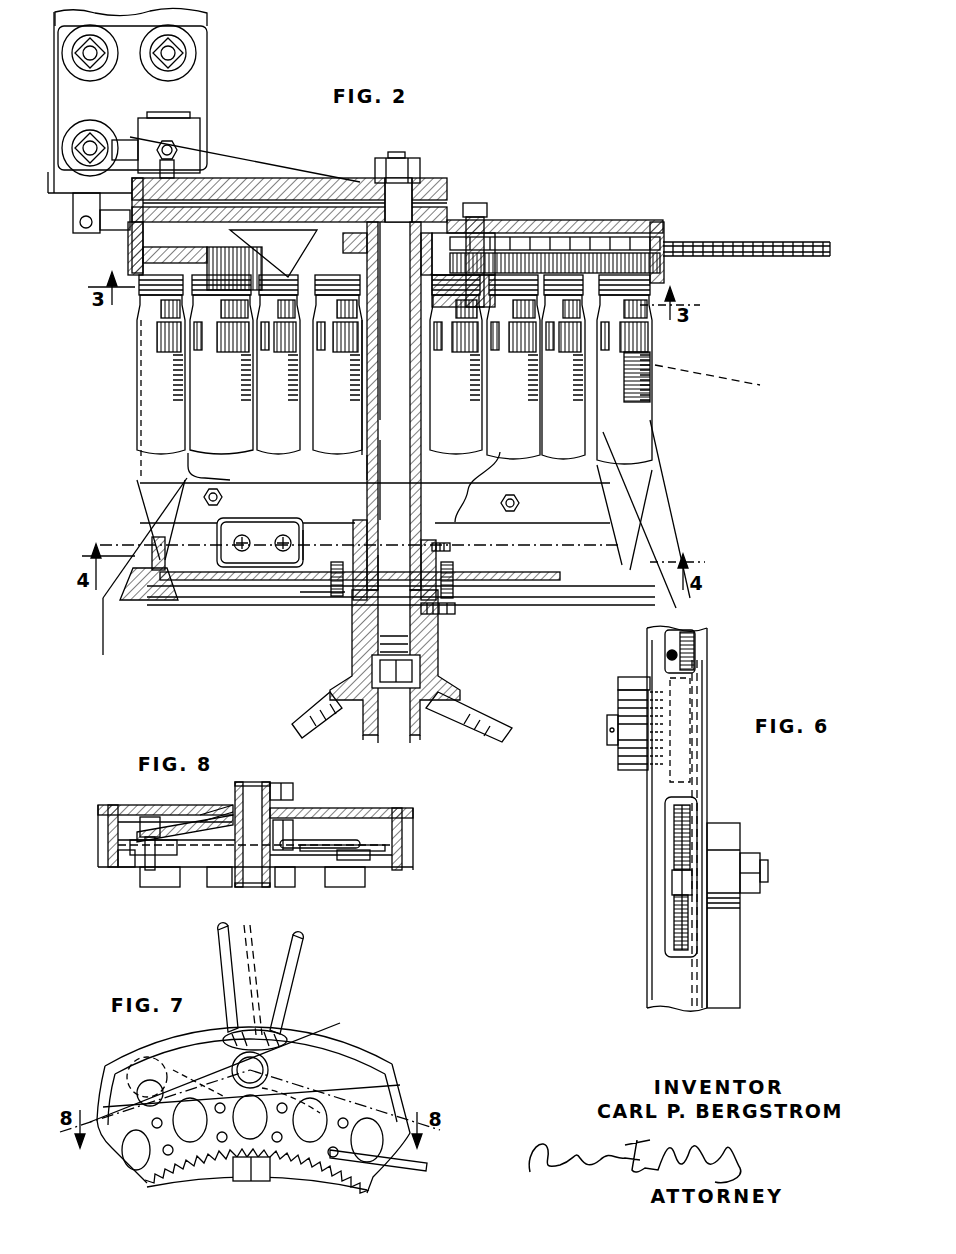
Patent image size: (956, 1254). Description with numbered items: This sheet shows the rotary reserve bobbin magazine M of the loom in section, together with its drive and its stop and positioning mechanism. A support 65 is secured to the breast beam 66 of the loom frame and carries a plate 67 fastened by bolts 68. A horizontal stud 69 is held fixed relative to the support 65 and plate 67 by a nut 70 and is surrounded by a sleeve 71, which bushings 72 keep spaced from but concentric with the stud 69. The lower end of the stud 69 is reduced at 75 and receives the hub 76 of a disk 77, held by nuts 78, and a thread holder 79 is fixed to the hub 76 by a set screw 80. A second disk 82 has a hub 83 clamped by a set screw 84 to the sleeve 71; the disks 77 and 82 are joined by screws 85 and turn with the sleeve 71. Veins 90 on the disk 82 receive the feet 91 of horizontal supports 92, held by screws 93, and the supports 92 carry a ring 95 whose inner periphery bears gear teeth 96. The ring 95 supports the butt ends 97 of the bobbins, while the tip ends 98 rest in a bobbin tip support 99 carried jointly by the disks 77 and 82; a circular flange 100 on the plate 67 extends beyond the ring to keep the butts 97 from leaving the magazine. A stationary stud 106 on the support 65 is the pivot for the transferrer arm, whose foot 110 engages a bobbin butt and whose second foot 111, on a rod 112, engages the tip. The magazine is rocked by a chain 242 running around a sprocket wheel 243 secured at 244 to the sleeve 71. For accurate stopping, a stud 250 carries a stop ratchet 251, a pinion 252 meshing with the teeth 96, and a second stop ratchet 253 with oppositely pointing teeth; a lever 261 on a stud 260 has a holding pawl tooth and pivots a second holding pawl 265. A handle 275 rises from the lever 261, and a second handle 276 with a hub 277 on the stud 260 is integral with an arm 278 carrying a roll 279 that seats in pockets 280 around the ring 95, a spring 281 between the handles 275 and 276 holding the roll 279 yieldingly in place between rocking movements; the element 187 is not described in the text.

In FIG. 2, the support 65 is at (200, 86).
In FIG. 6, the support 65 is at (730, 983).
In FIG. 2, the breast beam 66 is at (207, 22).
In FIG. 2, the plate 67 is at (268, 205).
In FIG. 8, the plate 67 is at (128, 808).
In FIG. 7, the plate 67 is at (377, 1098).
In FIG. 6, the plate 67 is at (702, 793).
In FIG. 2, the bolts 68 is at (207, 197).
In FIG. 2, the horizontal stud 69 is at (400, 364).
In FIG. 6, the horizontal stud 69 is at (768, 871).
In FIG. 2, the nut 70 is at (420, 172).
In FIG. 6, the nut 70 is at (748, 862).
In FIG. 2, the sleeve 71 is at (367, 466).
In FIG. 2, the bushings 72 is at (412, 265).
In FIG. 2, the reduced end of stud 75 is at (365, 617).
In FIG. 2, the hub 76 is at (372, 633).
In FIG. 2, the disk 77 is at (322, 592).
In FIG. 2, the nuts 78 is at (402, 673).
In FIG. 2, the thread holder 79 is at (312, 703).
In FIG. 2, the set screw 80 is at (455, 612).
In FIG. 2, the second disk 82 is at (282, 581).
In FIG. 2, the hub 83 is at (361, 524).
In FIG. 2, the set screw 84 is at (450, 547).
In FIG. 2, the screws 85 is at (337, 562).
In FIG. 2, the veins 90 is at (318, 527).
In FIG. 2, the feet 91 is at (293, 524).
In FIG. 2, the supports 92 is at (192, 466).
In FIG. 2, the screws 93 is at (244, 537).
In FIG. 2, the ring 95 is at (664, 270).
In FIG. 8, the ring 95 is at (125, 860).
In FIG. 7, the ring 95 is at (372, 1172).
In FIG. 2, the gear teeth 96 is at (517, 262).
In FIG. 7, the gear teeth 96 is at (322, 1170).
In FIG. 2, the butt ends 97 is at (218, 262).
In FIG. 2, the tip ends 98 is at (155, 548).
In FIG. 2, the bobbin tip support 99 is at (143, 594).
In FIG. 2, the circular flange 100 is at (128, 258).
In FIG. 8, the circular flange 100 is at (108, 848).
In FIG. 6, the circular flange 100 is at (655, 806).
In FIG. 2, the stud 106 is at (168, 116).
In FIG. 2, the foot 110 is at (396, 360).
In FIG. 2, the second foot 111 is at (392, 480).
In FIG. 2, the rod 112 is at (362, 388).
In FIG. 8, the rod 187 is at (345, 840).
In FIG. 7, the rod 187 is at (418, 1166).
In FIG. 6, the rod 187 is at (668, 657).
In FIG. 2, the chain 242 is at (700, 245).
In FIG. 6, the chain 242 is at (674, 922).
In FIG. 2, the sprocket wheel 243 is at (450, 225).
In FIG. 6, the sprocket wheel 243 is at (680, 858).
In FIG. 2, the securing point 244 is at (398, 261).
In FIG. 6, the stud 250 is at (607, 738).
In FIG. 6, the stop ratchet 251 is at (685, 698).
In FIG. 6, the pinion 252 is at (650, 772).
In FIG. 6, the stop ratchet 253 is at (625, 748).
In FIG. 8, the stud 260 is at (252, 790).
In FIG. 7, the stud 260 is at (268, 1070).
In FIG. 8, the lever 261 is at (305, 814).
In FIG. 7, the lever 261 is at (233, 1175).
In FIG. 6, the lever 261 is at (690, 645).
In FIG. 6, the second holding pawl 265 is at (625, 683).
In FIG. 8, the handle 275 is at (215, 820).
In FIG. 7, the handle 275 is at (293, 960).
In FIG. 7, the second handle 276 is at (222, 943).
In FIG. 8, the hub 277 is at (230, 880).
In FIG. 7, the hub 277 is at (245, 1068).
In FIG. 8, the arm 278 is at (185, 830).
In FIG. 7, the arm 278 is at (213, 1078).
In FIG. 8, the roll 279 is at (168, 862).
In FIG. 7, the roll 279 is at (148, 1095).
In FIG. 8, the pockets 280 is at (362, 860).
In FIG. 7, the pockets 280 is at (332, 1118).
In FIG. 7, the spring 281 is at (257, 1030).
In FIG. 2, the reserve bobbin magazine M is at (605, 222).
In FIG. 8, the reserve bobbin magazine M is at (100, 812).
In FIG. 7, the reserve bobbin magazine M is at (395, 1082).
In FIG. 6, the reserve bobbin magazine M is at (703, 665).